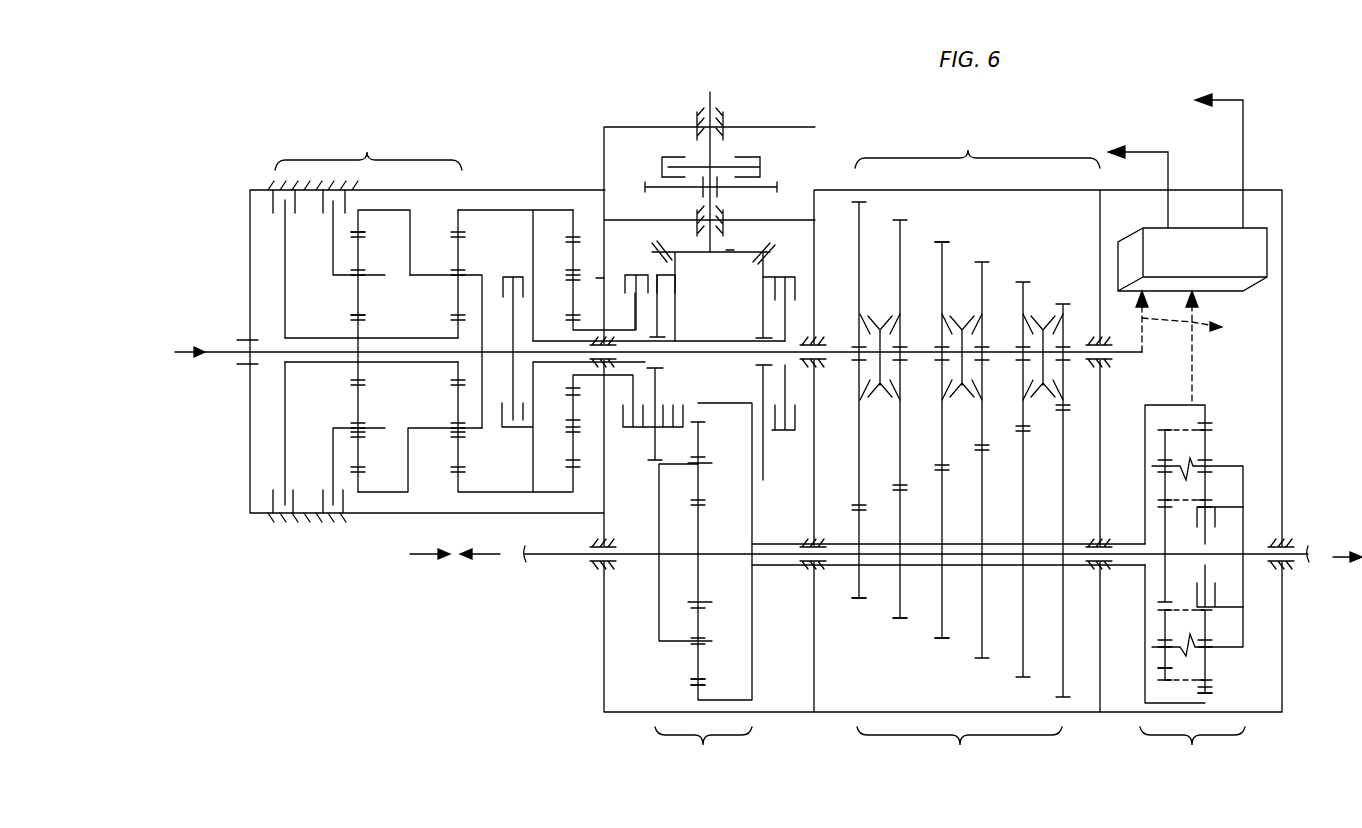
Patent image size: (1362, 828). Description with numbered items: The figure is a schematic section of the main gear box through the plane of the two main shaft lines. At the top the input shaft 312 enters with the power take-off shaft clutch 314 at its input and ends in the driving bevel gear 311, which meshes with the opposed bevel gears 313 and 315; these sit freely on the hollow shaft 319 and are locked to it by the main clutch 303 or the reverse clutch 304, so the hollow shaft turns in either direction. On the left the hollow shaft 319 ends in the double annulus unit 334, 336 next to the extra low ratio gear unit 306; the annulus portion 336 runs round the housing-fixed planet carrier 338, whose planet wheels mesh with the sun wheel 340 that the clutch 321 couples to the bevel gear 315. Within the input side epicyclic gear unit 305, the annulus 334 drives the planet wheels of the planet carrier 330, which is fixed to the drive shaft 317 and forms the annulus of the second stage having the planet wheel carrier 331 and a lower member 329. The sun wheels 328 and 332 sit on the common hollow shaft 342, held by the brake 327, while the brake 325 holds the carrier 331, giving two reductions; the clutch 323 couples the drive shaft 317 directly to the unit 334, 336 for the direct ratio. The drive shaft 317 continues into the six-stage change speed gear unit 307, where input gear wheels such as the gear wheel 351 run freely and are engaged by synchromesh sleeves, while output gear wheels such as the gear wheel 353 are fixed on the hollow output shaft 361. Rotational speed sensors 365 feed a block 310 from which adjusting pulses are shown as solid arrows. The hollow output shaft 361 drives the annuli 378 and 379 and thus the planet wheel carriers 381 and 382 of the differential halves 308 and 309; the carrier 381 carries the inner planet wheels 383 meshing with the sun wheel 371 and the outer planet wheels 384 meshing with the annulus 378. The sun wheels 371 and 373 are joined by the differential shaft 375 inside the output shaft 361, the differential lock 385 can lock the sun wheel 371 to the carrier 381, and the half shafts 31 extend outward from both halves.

The half shafts 31 is at (478, 557).
The main clutch 303 is at (785, 322).
The reverse clutch 304 is at (675, 310).
The input side epicyclic gear unit 305 is at (368, 149).
The extra low ratio gear unit 306 is at (574, 158).
The change speed gear unit 307 is at (948, 455).
The right-hand differential half 308 is at (1192, 754).
The left-hand differential half 309 is at (703, 753).
The control unit 310 is at (1187, 200).
The driving bevel gear 311 is at (730, 252).
The input shaft 312 is at (710, 103).
The bevel gear 313 is at (760, 447).
The power take-off shaft clutch 314 is at (717, 165).
The bevel gear 315 is at (658, 458).
The drive shaft 317 is at (330, 352).
The hollow shaft 319 is at (730, 340).
The clutch 321 is at (628, 395).
The clutch 323 is at (508, 392).
The brake 325 is at (326, 507).
The brake 327 is at (273, 507).
The sun wheel 328 is at (458, 376).
The carrier / connecting member 329 is at (406, 492).
The planet carrier 330 is at (483, 280).
The planet wheel carrier 331 is at (345, 278).
The sun wheel 332 is at (358, 376).
The annulus 334 is at (480, 210).
The annulus portion 336 is at (545, 210).
The planet carrier 338 is at (598, 278).
The sun wheel 340 is at (575, 316).
The hollow shaft 342 is at (432, 340).
The gear wheel 351 is at (942, 242).
The gear wheel 353 is at (944, 622).
The hollow output shaft 361 is at (877, 567).
The rotational speed sensors 365 is at (1200, 355).
The sun wheel 371 is at (1165, 517).
The sun wheel 373 is at (701, 531).
The differential shaft 375 is at (920, 559).
The annulus 378 is at (1205, 697).
The annulus 379 is at (715, 700).
The planet wheel carrier 381 is at (1232, 466).
The planet wheel carrier 382 is at (672, 645).
The inner set of planet wheels 383 is at (1162, 668).
The outer set of planet wheels 384 is at (1208, 668).
The differential lock 385 is at (1212, 548).